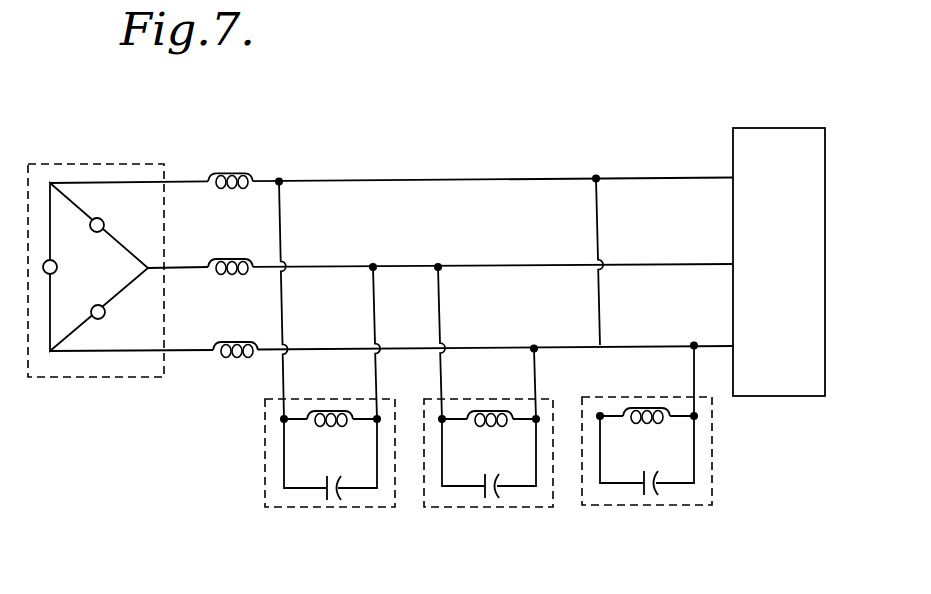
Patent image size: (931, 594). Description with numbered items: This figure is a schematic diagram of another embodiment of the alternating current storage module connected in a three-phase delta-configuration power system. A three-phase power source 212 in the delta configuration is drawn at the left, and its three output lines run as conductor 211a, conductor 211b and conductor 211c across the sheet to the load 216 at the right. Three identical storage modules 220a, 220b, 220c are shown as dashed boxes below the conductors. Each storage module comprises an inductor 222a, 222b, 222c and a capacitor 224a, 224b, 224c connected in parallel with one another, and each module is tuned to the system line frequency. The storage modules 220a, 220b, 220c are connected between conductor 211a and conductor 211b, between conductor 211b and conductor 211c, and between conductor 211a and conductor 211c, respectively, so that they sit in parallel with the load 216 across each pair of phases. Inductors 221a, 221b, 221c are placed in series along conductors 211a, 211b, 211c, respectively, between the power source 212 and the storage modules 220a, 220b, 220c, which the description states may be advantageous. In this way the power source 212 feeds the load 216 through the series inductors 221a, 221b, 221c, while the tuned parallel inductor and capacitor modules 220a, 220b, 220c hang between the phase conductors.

The three-phase power source 212 is at (76, 164).
The conductor 211a is at (365, 180).
The conductor 211b is at (417, 265).
The conductor 211c is at (343, 349).
The inductor 221a is at (227, 174).
The inductor 221b is at (239, 260).
The inductor 221c is at (233, 355).
The load 216 is at (752, 162).
The storage module 220a is at (264, 473).
The storage module 220b is at (462, 508).
The storage module 220c is at (713, 480).
The inductor 222a is at (332, 421).
The inductor 222b is at (490, 414).
The inductor 222c is at (650, 420).
The capacitor 224a is at (332, 494).
The capacitor 224b is at (497, 498).
The capacitor 224c is at (650, 496).